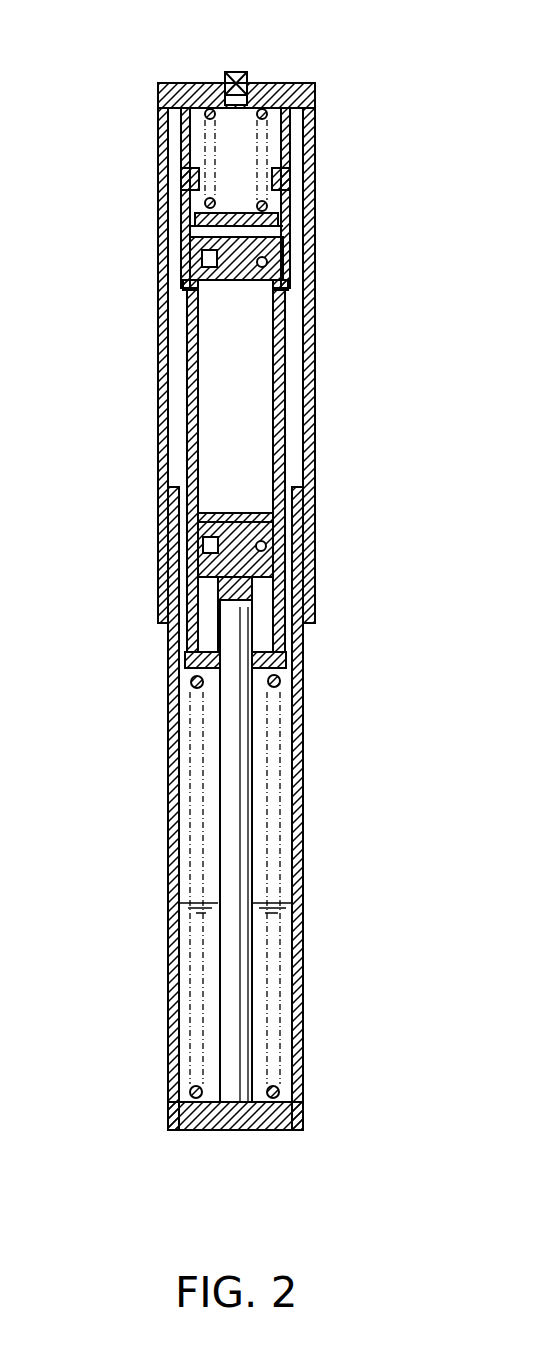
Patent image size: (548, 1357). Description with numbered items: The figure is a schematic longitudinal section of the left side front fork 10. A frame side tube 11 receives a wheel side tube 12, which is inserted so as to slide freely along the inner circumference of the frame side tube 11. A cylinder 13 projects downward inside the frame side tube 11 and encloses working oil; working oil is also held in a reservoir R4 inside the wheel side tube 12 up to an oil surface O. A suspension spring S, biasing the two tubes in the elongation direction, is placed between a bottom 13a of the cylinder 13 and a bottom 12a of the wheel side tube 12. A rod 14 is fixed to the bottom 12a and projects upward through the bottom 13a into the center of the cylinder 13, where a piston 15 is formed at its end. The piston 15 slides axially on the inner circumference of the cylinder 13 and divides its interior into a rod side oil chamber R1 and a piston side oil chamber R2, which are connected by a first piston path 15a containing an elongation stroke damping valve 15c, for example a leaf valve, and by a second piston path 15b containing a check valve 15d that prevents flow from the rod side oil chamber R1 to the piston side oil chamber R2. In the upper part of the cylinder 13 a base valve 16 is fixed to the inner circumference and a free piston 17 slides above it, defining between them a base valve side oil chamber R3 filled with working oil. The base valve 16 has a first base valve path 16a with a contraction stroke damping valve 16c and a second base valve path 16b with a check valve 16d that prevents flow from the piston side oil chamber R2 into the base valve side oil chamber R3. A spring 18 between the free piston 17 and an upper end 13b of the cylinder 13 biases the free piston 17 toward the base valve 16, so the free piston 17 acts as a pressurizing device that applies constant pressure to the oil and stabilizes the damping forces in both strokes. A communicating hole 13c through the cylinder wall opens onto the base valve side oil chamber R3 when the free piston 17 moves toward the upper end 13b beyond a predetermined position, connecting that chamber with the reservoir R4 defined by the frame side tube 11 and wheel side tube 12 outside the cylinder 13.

The left side front fork 10 is at (370, 66).
The frame side tube 11 is at (308, 395).
The wheel side tube 12 is at (303, 890).
The bottom of the wheel side tube 12a is at (290, 1115).
The cylinder 13 is at (190, 384).
The bottom of the cylinder 13a is at (262, 668).
The upper end of the cylinder 13b is at (287, 124).
The communicating hole 13c is at (188, 180).
The rod 14 is at (253, 975).
The piston 15 is at (240, 515).
The first piston path 15a is at (203, 527).
The second piston path 15b is at (266, 568).
The elongation stroke damping valve 15c is at (210, 546).
The check valve 15d is at (266, 546).
The base valve 16 is at (227, 275).
The first base valve path 16a is at (200, 243).
The second base valve path 16b is at (331, 270).
The contraction stroke damping valve 16c is at (202, 259).
The check valve 16d is at (268, 262).
The free piston 17 is at (285, 163).
The spring 18 is at (205, 116).
The rod side oil chamber R1 is at (262, 640).
The piston side oil chamber R2 is at (225, 442).
The base valve side oil chamber R3 is at (283, 231).
The reservoir R4 is at (185, 975).
The suspension spring S is at (191, 683).
The oil surface O is at (195, 902).